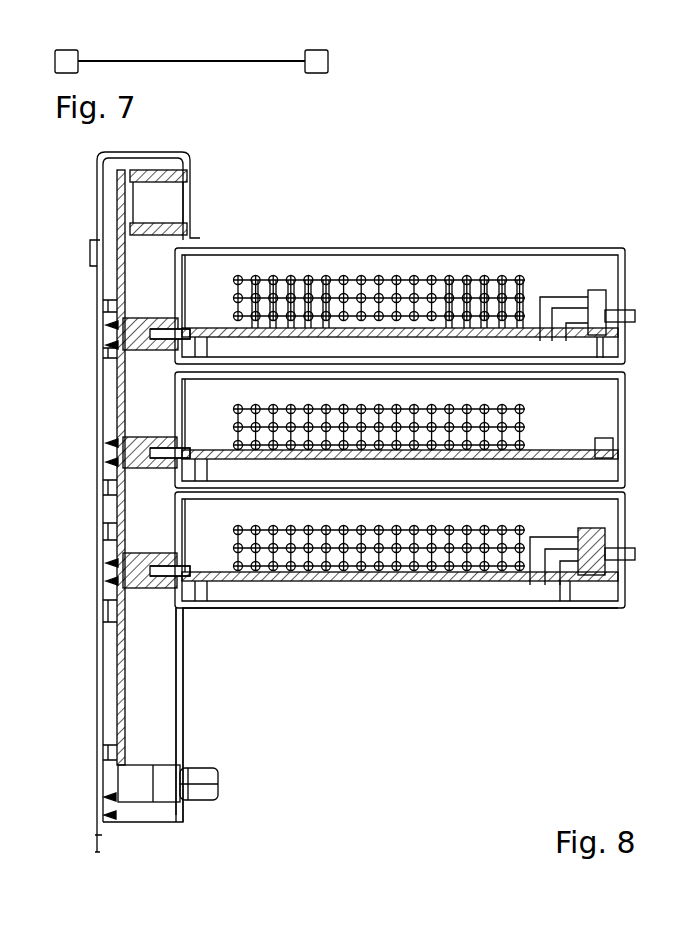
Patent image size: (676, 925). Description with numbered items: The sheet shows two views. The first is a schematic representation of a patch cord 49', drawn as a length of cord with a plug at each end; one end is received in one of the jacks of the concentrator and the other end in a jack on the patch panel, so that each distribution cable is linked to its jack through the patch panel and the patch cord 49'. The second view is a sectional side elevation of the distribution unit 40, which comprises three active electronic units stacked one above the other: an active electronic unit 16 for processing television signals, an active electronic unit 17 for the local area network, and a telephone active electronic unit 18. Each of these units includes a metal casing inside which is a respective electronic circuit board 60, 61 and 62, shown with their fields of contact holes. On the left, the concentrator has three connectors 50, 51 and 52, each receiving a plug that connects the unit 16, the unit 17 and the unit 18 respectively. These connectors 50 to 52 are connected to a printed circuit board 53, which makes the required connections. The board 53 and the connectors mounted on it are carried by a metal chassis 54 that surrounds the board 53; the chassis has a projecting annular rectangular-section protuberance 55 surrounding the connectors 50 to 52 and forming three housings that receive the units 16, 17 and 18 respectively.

In FIG. 8, the unit 40 is at (402, 180).
In FIG. 8, the active electronic unit 16 is at (544, 275).
In FIG. 8, the active electronic unit 17 is at (605, 408).
In FIG. 8, the telephone active electronic unit 18 is at (612, 505).
In FIG. 7, the patch cord 49' is at (191, 99).
In FIG. 8, the connector 50 is at (142, 322).
In FIG. 8, the connector 51 is at (140, 447).
In FIG. 8, the connector 52 is at (140, 562).
In FIG. 8, the printed circuit board 53 is at (120, 695).
In FIG. 8, the metal chassis 54 is at (182, 637).
In FIG. 8, the protuberance 55 is at (487, 610).
In FIG. 8, the electronic circuit board 60 is at (215, 327).
In FIG. 8, the electronic circuit board 61 is at (216, 450).
In FIG. 8, the electronic circuit board 62 is at (216, 570).